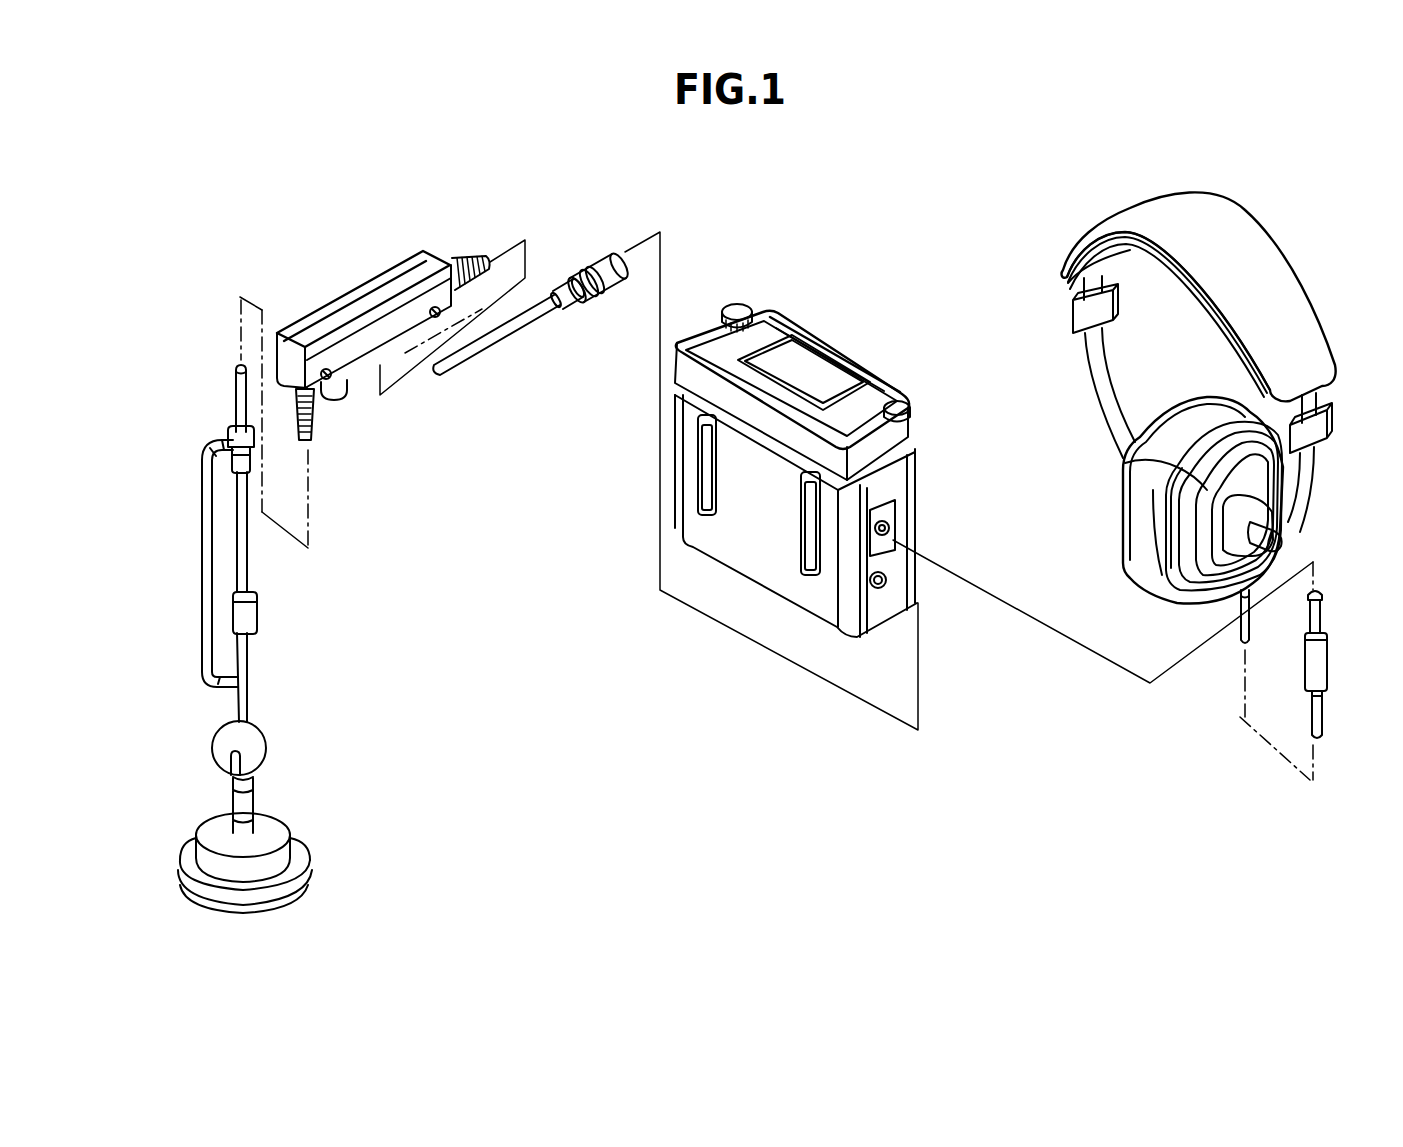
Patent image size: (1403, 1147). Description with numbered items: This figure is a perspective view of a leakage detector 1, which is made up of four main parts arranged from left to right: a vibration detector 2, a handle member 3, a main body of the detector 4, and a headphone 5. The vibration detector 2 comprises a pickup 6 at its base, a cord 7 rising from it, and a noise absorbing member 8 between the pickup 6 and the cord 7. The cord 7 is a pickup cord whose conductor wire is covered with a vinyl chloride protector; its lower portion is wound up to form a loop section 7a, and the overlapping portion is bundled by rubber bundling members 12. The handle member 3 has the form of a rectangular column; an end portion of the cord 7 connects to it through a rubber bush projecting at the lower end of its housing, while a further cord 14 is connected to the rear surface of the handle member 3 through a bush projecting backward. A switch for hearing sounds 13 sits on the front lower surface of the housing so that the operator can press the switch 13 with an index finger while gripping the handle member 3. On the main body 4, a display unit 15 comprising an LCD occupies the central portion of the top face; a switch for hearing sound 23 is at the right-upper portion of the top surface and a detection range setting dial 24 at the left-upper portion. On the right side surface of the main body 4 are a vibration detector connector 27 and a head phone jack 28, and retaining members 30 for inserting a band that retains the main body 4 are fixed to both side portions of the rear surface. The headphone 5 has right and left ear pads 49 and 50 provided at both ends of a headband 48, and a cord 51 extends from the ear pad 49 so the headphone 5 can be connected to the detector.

The leakage detector 1 is at (1107, 148).
The vibration detector 2 is at (184, 434).
The handle member 3 is at (390, 260).
The main body of the detector 4 is at (874, 328).
The headphone 5 is at (1303, 248).
The pickup 6 is at (304, 843).
The cord 7 is at (239, 399).
The loop section 7a is at (208, 560).
The noise absorbing member 8 is at (265, 748).
The bundling member 12 is at (252, 610).
The switch for hearing sounds 13 is at (339, 398).
The cord 14 is at (512, 330).
The display unit 15 is at (790, 350).
The switch for hearing sound 23 is at (913, 403).
The detection range setting dial 24 is at (733, 304).
The vibration detector connector 27 is at (880, 592).
The head phone jack 28 is at (888, 521).
The retaining member 30 is at (710, 514).
The headband 48 is at (1197, 203).
The right ear pad 49 is at (1277, 552).
The left ear pad 50 is at (1122, 508).
The cord 51 is at (1323, 722).